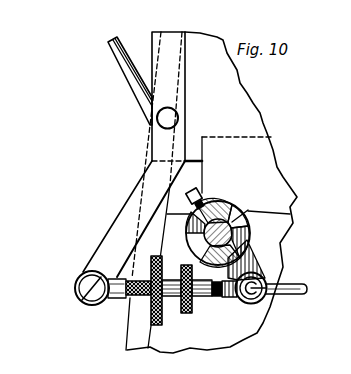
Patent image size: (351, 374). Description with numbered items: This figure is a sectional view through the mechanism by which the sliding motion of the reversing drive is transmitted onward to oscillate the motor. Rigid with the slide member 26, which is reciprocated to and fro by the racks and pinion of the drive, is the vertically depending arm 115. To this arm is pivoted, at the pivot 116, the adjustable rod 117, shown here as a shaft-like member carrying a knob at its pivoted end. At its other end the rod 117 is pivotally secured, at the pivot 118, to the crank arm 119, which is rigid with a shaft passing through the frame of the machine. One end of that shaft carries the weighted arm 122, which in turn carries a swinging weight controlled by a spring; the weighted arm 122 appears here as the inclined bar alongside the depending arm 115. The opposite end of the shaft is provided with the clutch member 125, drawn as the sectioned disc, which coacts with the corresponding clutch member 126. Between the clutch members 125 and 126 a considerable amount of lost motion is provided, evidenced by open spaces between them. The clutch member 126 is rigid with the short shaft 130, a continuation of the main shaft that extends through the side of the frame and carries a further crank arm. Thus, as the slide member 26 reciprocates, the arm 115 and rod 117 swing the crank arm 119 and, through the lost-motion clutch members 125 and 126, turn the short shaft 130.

The slide member 26 is at (240, 97).
The vertically depending arm 115 is at (158, 52).
The weighted arm 122 is at (117, 49).
The pivot 116 is at (80, 276).
The adjustable rod 117 is at (292, 295).
The pivot 118 is at (260, 289).
The crank arm 119 is at (250, 261).
The clutch member 125 is at (226, 223).
The short shaft 130 is at (244, 215).
The clutch member 126 is at (214, 207).